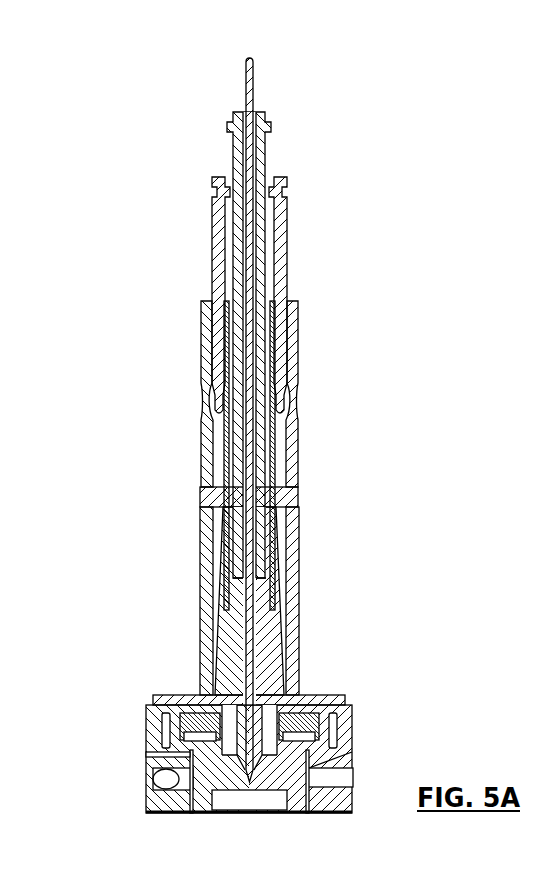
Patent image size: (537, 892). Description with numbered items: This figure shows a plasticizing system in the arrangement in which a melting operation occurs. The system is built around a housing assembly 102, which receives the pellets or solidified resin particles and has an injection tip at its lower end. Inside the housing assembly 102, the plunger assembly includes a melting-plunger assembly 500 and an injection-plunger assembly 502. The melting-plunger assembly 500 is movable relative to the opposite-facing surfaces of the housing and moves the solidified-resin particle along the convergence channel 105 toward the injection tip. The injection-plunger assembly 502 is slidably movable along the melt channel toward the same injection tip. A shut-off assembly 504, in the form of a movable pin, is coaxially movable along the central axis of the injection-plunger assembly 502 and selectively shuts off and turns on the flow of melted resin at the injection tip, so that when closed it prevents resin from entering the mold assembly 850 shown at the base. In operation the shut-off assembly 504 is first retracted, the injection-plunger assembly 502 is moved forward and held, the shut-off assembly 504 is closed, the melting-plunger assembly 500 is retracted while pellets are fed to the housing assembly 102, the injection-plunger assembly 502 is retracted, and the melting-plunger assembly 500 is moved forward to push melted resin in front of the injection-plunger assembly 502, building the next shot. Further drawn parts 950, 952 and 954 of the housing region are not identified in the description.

The housing assembly 102 is at (92, 438).
The convergence channel 105 is at (283, 641).
The melting-plunger assembly 500 is at (212, 225).
The injection-plunger assembly 502 is at (268, 157).
The shut-off assembly 504 is at (262, 73).
The mold assembly 850 is at (147, 808).
The flexure sleeve 950 is at (200, 412).
The lower sleeve 952 is at (201, 537).
The base block 954 is at (150, 771).